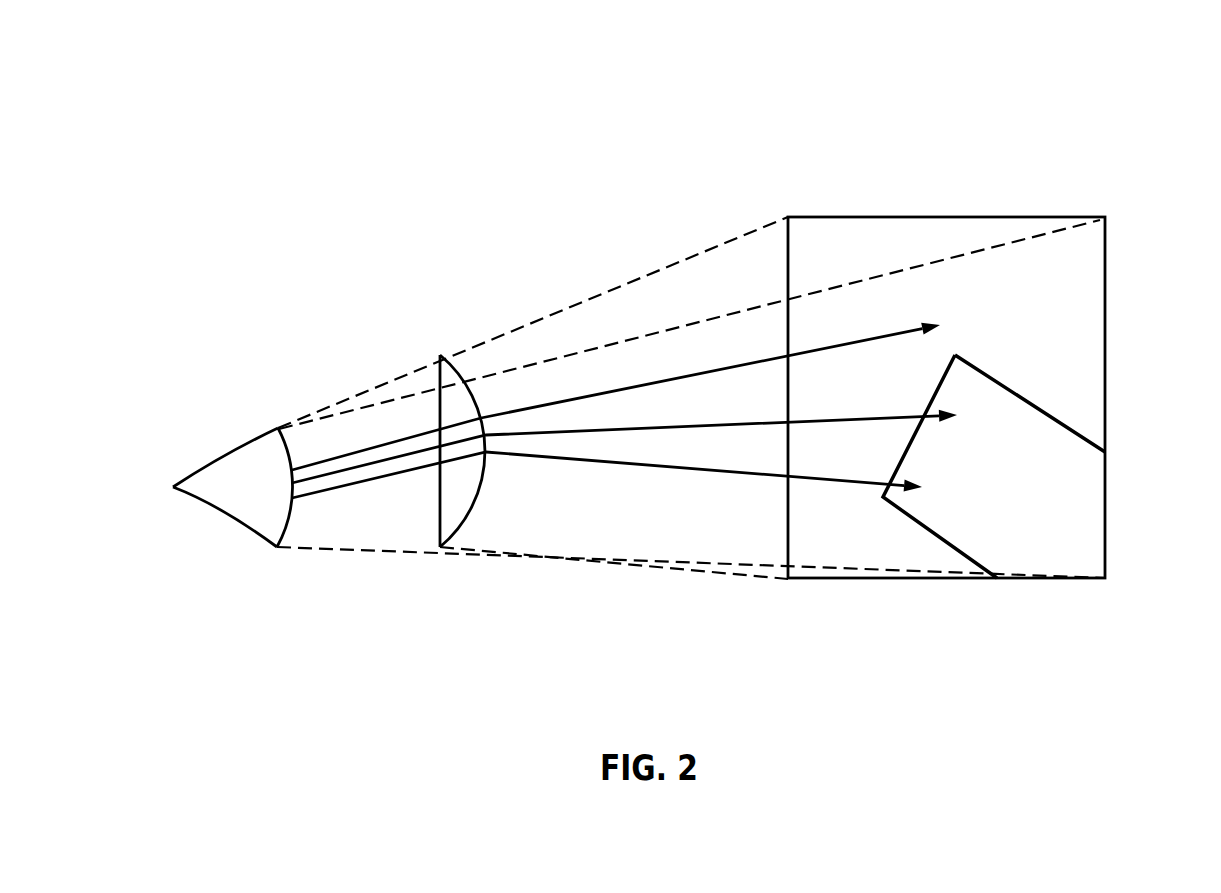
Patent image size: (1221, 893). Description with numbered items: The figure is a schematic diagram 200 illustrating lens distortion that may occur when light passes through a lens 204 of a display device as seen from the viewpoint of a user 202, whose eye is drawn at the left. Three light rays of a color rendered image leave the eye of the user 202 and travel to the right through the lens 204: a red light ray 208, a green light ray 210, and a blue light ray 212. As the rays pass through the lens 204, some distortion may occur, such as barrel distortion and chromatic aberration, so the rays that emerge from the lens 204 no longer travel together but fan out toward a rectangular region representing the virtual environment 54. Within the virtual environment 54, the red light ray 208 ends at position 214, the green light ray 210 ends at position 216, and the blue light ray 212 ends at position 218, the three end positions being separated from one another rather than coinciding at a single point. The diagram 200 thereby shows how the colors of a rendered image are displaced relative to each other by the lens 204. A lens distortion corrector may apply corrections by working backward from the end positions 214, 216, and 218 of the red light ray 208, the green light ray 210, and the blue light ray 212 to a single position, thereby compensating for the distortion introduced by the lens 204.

The diagram 200 is at (272, 76).
The user 202 is at (237, 515).
The lens 204 is at (467, 515).
The red light ray 208 is at (617, 390).
The green light ray 210 is at (705, 422).
The blue light ray 212 is at (617, 463).
The virtual environment 54 is at (1100, 189).
The position 214 is at (940, 325).
The position 216 is at (957, 415).
The position 218 is at (922, 487).